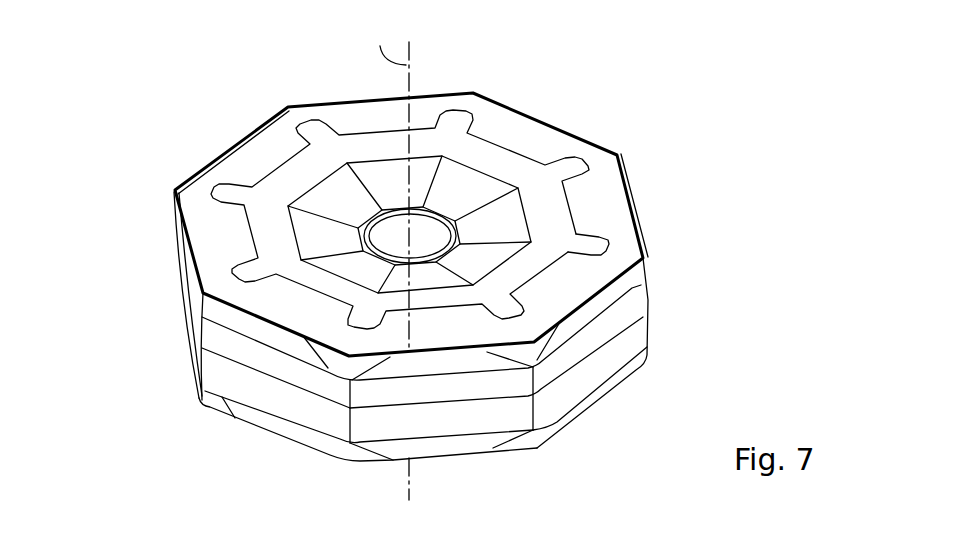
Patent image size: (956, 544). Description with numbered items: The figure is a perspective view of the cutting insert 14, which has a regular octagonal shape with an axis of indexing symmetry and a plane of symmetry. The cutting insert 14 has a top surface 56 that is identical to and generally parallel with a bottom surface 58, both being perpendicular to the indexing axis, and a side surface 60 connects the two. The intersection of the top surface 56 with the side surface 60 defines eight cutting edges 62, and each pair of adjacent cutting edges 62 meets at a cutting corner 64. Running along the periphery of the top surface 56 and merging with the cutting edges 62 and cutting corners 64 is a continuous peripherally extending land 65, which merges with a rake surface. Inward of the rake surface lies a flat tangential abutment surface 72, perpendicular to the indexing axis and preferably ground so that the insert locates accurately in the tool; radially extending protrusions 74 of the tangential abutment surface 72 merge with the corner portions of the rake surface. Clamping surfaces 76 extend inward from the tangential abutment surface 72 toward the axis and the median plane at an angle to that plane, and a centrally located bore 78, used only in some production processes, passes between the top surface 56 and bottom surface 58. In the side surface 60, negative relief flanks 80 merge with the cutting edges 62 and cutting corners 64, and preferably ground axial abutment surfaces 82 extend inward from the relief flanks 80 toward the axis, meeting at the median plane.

The cutting insert 14 is at (679, 99).
The top surface 56 is at (212, 226).
The bottom surface 58 is at (245, 449).
The side surface 60 is at (596, 349).
The cutting edges 62 is at (272, 327).
The cutting corner 64 is at (202, 293).
The land 65 is at (634, 192).
The tangential abutment surface 72 is at (537, 203).
The radially extending protrusions 74 is at (598, 248).
The clamping surfaces 76 is at (337, 193).
The bore 78 is at (431, 232).
The negative relief flanks 80 is at (601, 303).
The axial abutment surfaces 82 is at (572, 393).